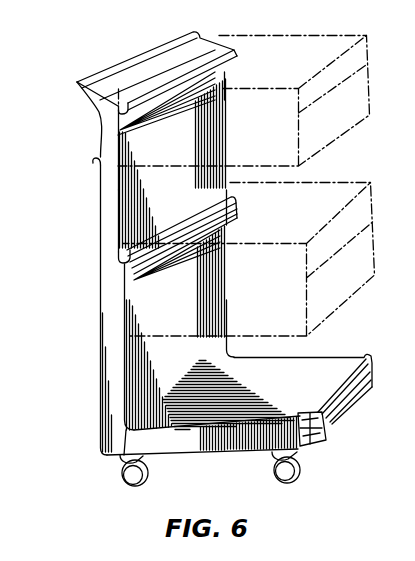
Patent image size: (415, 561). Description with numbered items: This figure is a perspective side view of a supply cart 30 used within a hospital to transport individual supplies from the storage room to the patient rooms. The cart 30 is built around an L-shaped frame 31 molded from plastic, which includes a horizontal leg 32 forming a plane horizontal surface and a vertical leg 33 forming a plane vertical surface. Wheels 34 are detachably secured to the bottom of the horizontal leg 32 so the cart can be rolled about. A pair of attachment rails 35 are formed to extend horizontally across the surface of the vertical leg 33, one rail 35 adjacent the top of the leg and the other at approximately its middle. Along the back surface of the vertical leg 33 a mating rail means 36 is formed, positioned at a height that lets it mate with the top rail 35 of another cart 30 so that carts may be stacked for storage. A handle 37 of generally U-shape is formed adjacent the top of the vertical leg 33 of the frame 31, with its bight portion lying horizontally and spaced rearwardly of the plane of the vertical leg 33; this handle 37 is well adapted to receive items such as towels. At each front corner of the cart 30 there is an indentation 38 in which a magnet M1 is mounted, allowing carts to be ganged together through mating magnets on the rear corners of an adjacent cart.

The supply cart 30 is at (89, 296).
The L-shaped frame 31 is at (101, 375).
The horizontal leg 32 is at (225, 445).
The vertical leg 33 is at (107, 206).
The wheels 34 is at (122, 476).
The attachment rails 35 is at (125, 107).
The mating rail means 36 is at (96, 161).
The handle 37 is at (128, 60).
The indentation 38 is at (333, 423).
The magnet M1 is at (316, 428).